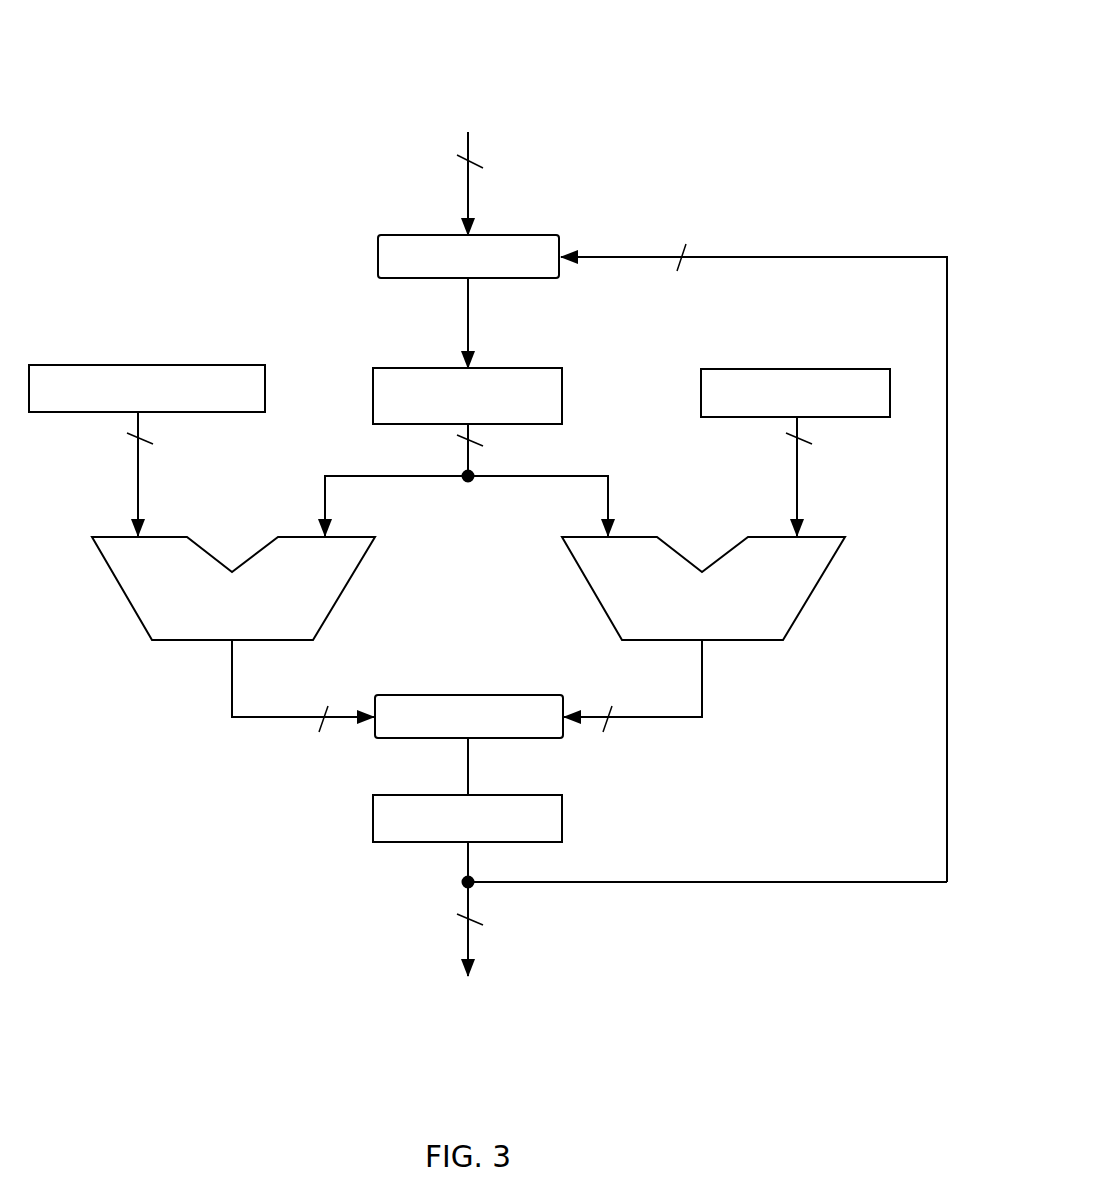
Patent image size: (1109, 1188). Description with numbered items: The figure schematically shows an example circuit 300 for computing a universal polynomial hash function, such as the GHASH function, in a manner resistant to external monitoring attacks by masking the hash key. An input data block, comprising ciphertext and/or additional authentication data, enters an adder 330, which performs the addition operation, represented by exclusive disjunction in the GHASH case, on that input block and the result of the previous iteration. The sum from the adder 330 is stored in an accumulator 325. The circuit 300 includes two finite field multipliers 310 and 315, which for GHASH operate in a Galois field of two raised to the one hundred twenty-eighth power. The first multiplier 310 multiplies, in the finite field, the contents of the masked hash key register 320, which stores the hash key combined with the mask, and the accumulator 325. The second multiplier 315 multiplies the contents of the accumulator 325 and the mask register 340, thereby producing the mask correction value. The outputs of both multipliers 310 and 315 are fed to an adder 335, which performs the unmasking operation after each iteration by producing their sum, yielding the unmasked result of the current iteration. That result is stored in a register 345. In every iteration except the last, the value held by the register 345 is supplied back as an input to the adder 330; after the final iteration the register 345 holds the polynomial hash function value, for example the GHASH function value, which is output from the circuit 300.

The circuit 300 is at (717, 60).
The first finite field multiplier 310 is at (216, 632).
The second finite field multiplier 315 is at (686, 632).
The masked hash key register 320 is at (198, 408).
The accumulator 325 is at (452, 416).
The adder 330 is at (468, 241).
The adder 335 is at (469, 704).
The mask register 340 is at (878, 402).
The register 345 is at (526, 828).